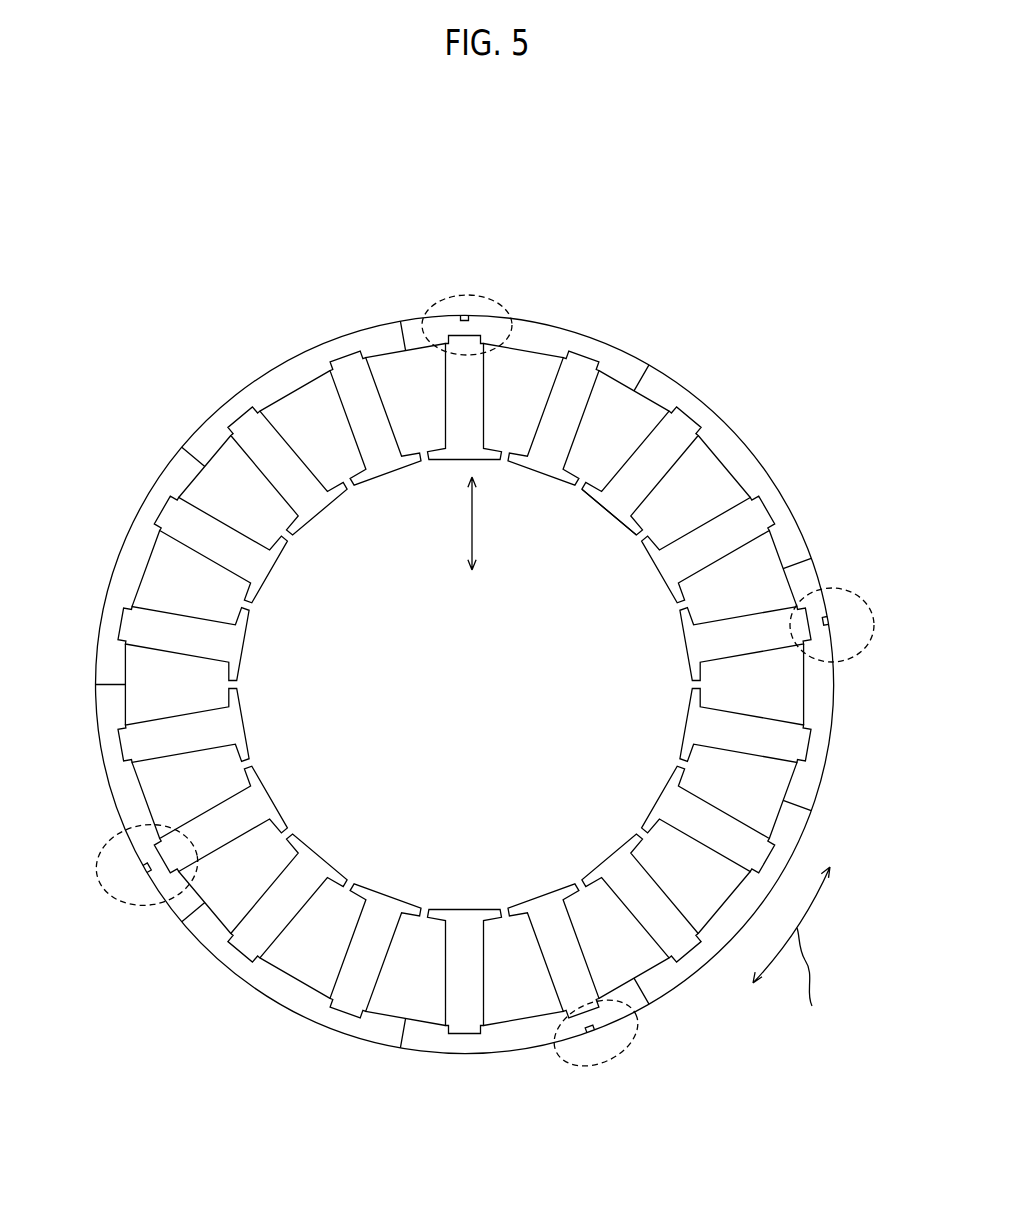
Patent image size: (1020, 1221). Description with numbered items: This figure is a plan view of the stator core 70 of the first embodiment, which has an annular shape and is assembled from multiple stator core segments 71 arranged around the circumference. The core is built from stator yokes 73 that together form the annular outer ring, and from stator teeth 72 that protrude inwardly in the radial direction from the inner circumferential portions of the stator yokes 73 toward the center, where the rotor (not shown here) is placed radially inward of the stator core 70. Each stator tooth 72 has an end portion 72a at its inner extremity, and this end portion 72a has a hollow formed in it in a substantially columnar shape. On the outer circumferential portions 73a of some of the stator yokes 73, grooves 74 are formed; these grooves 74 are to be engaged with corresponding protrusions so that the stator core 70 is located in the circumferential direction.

The stator core 70 is at (460, 171).
The stator core segment 71 is at (297, 358).
The stator tooth 72 is at (304, 484).
The end portion 72a is at (606, 514).
The stator yoke 73 is at (252, 388).
The outer circumferential portion 73a is at (706, 376).
The groove 74 is at (467, 304).